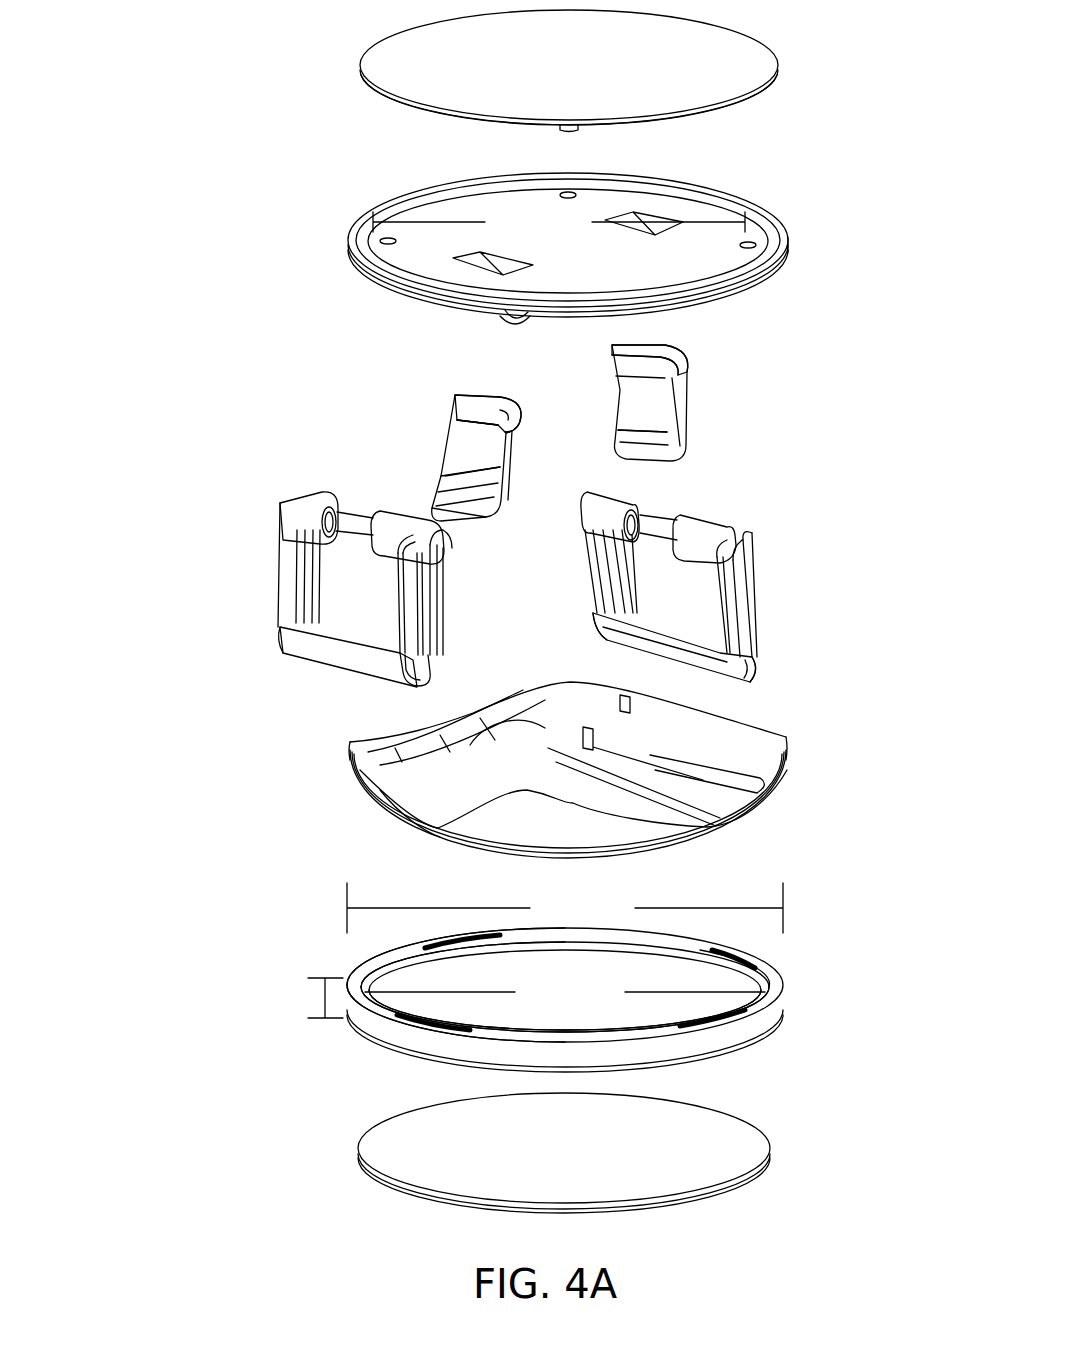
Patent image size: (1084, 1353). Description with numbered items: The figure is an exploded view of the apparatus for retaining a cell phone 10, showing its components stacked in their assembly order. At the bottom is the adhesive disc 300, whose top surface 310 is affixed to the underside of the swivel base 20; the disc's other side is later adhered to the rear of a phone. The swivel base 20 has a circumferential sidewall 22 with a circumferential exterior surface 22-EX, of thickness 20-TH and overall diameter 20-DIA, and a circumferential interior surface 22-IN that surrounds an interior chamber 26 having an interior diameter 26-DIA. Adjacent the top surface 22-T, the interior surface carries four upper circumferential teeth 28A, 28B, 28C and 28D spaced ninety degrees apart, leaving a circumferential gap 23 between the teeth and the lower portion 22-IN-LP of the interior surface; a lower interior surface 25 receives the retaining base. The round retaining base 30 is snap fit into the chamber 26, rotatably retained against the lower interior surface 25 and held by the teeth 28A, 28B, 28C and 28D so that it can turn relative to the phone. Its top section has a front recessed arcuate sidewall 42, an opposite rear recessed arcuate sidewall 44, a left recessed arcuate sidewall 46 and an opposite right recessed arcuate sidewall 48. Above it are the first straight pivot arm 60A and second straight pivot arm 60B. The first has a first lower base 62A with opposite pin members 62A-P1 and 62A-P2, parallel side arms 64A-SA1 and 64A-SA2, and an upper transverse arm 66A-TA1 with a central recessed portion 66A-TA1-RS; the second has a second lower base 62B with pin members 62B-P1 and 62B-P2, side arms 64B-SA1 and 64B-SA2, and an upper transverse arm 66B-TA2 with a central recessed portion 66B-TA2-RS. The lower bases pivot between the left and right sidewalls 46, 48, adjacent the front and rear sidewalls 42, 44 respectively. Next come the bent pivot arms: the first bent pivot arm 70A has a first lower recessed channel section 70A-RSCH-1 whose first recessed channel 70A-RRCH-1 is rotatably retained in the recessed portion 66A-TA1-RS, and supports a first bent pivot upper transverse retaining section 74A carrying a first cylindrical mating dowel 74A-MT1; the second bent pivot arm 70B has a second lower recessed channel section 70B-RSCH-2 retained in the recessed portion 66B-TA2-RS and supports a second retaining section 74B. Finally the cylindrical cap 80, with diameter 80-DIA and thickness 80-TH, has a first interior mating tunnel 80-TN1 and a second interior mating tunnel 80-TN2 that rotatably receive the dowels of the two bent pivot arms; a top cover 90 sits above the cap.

The apparatus for retaining a cell phone 10 is at (232, 53).
The top cover 90 is at (590, 78).
The cylindrical cap 80 is at (612, 276).
The first interior mating tunnel 80-TN1 is at (455, 260).
The second interior mating tunnel 80-TN2 is at (648, 213).
The diameter of cylindrical cap 80-DIA is at (559, 221).
The thickness of cylindrical cap 80-TH is at (790, 252).
The first bent pivot upper transverse retaining section 74A is at (490, 410).
The first cylindrical mating dowel 74A-MT1 is at (470, 400).
The second bent pivot upper transverse retaining section 74B is at (668, 352).
The first bent pivot arm 70A is at (470, 462).
The first lower recessed channel section 70A-RSCH-1 is at (455, 430).
The first recessed channel 70A-RRCH-1 is at (447, 492).
The second bent pivot arm 70B is at (668, 400).
The second lower recessed channel section 70B-RSCH-2 is at (672, 455).
The upper transverse arm 66A-TA1 is at (300, 500).
The central recessed portion 66A-TA1-RS is at (336, 510).
The upper transverse arm 66B-TA2 is at (705, 540).
The central recessed portion 66B-TA2-RS is at (663, 527).
The parallel side arm 64A-SA1 is at (290, 576).
The parallel side arm 64A-SA2 is at (432, 592).
The parallel side arm 64B-SA1 is at (616, 597).
The parallel side arm 64B-SA2 is at (745, 596).
The first lower base 62A is at (323, 652).
The pin member 62A-P1 is at (272, 632).
The pin member 62A-P2 is at (428, 674).
The second lower base 62B is at (757, 646).
The pin member 62B-P1 is at (603, 638).
The pin member 62B-P2 is at (746, 666).
The first straight pivot arm 60A is at (344, 588).
The second straight pivot arm 60B is at (684, 587).
The retaining base 30 is at (564, 780).
The front recessed arcuate sidewall 42 is at (388, 787).
The rear recessed arcuate sidewall 44 is at (727, 728).
The left recessed arcuate sidewall 46 is at (457, 730).
The right recessed arcuate sidewall 48 is at (685, 840).
The swivel base 20 is at (561, 979).
The ring diameter 20-DIA is at (565, 908).
The thickness 20-TH is at (325, 998).
The circumferential sidewall 22 is at (753, 1042).
The top surface 22-T is at (372, 962).
The circumferential interior surface 22-IN is at (540, 1032).
The circumferential exterior surface 22-EX is at (352, 1028).
The lower portion of circumferential interior surface 22-IN-LP is at (740, 982).
The circumferential gap 23 is at (395, 958).
The lower interior surface 25 is at (665, 1027).
The interior chamber 26 is at (620, 1032).
The interior diameter 26-DIA is at (565, 990).
The upper circumferential tooth 28A is at (443, 943).
The upper circumferential tooth 28B is at (755, 957).
The upper circumferential tooth 28C is at (753, 1017).
The upper circumferential tooth 28D is at (400, 1043).
The adhesive disc 300 is at (712, 1150).
The top surface of adhesive disc 310 is at (592, 1163).